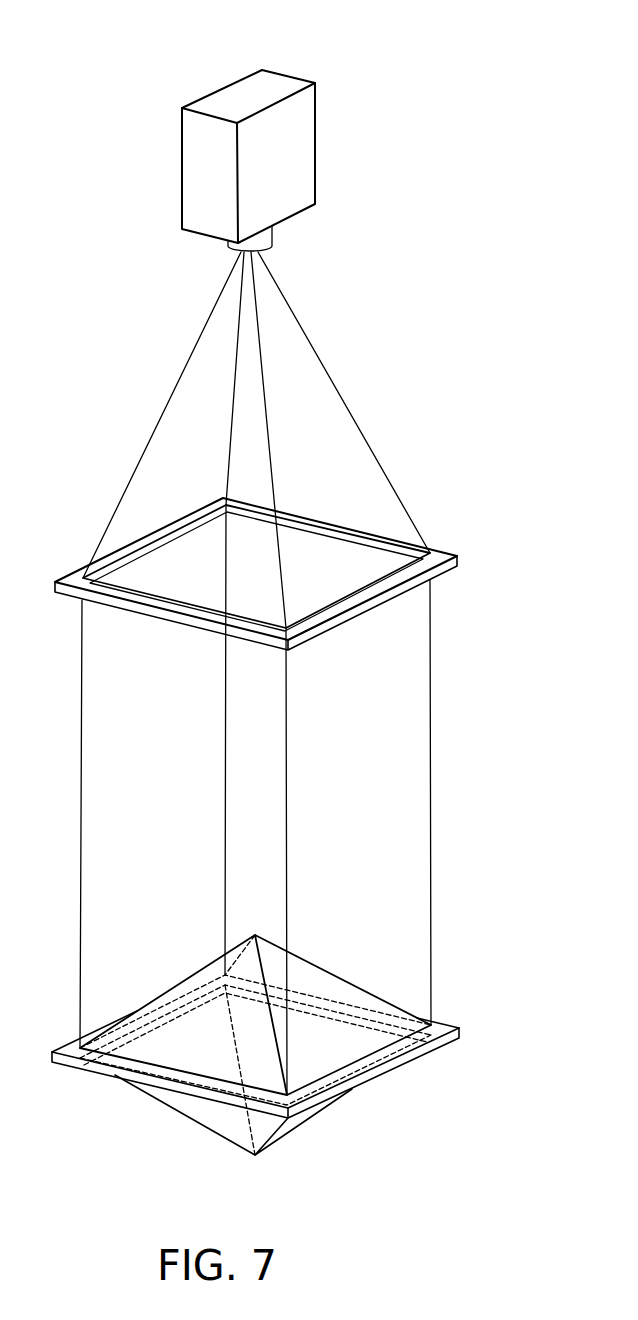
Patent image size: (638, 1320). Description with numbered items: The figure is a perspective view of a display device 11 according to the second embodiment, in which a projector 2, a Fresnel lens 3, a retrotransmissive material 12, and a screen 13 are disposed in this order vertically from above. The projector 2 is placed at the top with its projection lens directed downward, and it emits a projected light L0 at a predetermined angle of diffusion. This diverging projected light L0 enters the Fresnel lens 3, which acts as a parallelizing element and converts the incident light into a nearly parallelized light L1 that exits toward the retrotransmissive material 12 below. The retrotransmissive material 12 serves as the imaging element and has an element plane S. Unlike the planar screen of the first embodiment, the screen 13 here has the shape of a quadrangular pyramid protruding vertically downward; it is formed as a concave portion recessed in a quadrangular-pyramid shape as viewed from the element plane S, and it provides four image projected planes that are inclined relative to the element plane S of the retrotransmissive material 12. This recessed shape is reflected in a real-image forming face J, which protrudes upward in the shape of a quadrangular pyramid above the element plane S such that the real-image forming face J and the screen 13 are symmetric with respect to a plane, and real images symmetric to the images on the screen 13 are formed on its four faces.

The display device 11 is at (130, 64).
The projector 2 is at (312, 155).
The projected light L0 is at (345, 400).
The Fresnel lens 3 is at (445, 552).
The nearly parallelized light L1 is at (432, 782).
The retrotransmissive material 12 is at (437, 1020).
The element plane S is at (455, 1037).
The screen 13 is at (210, 1118).
The real-image forming face J is at (248, 967).